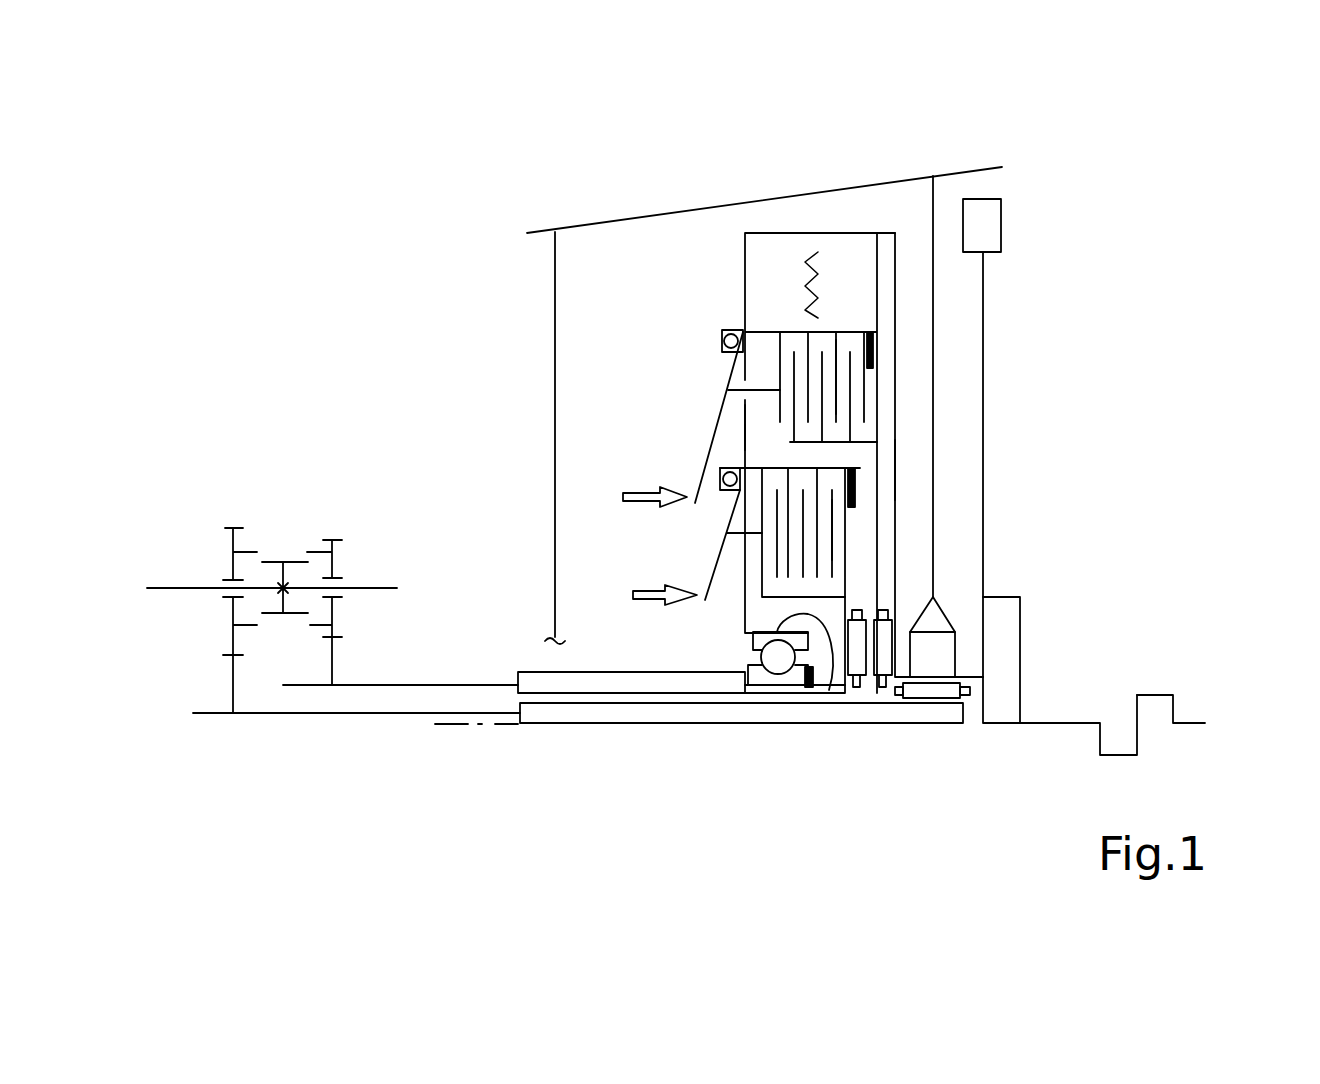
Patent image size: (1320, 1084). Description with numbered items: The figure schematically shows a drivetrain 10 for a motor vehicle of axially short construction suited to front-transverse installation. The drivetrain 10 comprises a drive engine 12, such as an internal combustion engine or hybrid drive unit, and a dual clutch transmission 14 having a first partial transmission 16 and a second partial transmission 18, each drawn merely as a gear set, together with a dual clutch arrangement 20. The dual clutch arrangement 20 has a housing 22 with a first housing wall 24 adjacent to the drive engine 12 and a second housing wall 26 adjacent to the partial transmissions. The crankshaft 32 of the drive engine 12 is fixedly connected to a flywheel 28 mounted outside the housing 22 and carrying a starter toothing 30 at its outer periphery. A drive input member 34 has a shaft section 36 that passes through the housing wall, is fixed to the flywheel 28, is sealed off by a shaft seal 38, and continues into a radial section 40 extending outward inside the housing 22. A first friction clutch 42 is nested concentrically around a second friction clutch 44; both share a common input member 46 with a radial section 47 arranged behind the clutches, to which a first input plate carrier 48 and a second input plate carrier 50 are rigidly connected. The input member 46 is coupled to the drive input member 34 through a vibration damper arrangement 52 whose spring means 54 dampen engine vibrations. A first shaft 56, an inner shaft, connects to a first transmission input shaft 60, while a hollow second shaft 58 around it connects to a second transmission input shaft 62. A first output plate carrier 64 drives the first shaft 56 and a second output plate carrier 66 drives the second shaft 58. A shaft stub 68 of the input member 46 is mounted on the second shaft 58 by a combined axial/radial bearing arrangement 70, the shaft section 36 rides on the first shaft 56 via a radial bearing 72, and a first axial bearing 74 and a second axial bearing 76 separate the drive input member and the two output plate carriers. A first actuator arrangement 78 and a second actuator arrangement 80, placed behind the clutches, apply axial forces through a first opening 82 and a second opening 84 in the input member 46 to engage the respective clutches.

The drivetrain 10 is at (1132, 158).
The drive engine 12 is at (1173, 692).
The dual clutch transmission 14 is at (436, 159).
The first partial transmission 16 is at (234, 486).
The second partial transmission 18 is at (341, 508).
The dual clutch arrangement 20 is at (879, 153).
The housing 22 is at (621, 216).
The first housing wall 24 is at (937, 300).
The second housing wall 26 is at (553, 510).
The flywheel 28 is at (1026, 663).
The starter toothing 30 is at (1006, 222).
The crankshaft 32 is at (1050, 723).
The drive input member 34 is at (900, 400).
The shaft section 36 is at (970, 675).
The shaft seal 38 is at (914, 672).
The radial section 40 is at (897, 470).
The first friction clutch 42 is at (842, 390).
The second friction clutch 44 is at (845, 533).
The input member 46 is at (742, 420).
The radial section 47 is at (742, 435).
The first input plate carrier 48 is at (850, 332).
The second input plate carrier 50 is at (782, 468).
The vibration damper arrangement 52 is at (742, 297).
The spring means 54 is at (787, 280).
The first shaft 56 is at (637, 705).
The second shaft 58 is at (549, 685).
The first transmission input shaft 60 is at (342, 715).
The second transmission input shaft 62 is at (400, 690).
The first output plate carrier 64 is at (879, 441).
The second output plate carrier 66 is at (845, 589).
The shaft stub 68 is at (829, 690).
The bearing arrangement 70 is at (742, 652).
The radial bearing 72 is at (940, 698).
The first axial bearing 74 is at (882, 690).
The second axial bearing 76 is at (856, 690).
The first actuator arrangement 78 is at (638, 483).
The second actuator arrangement 80 is at (647, 587).
The first opening 82 is at (738, 382).
The second opening 84 is at (741, 548).